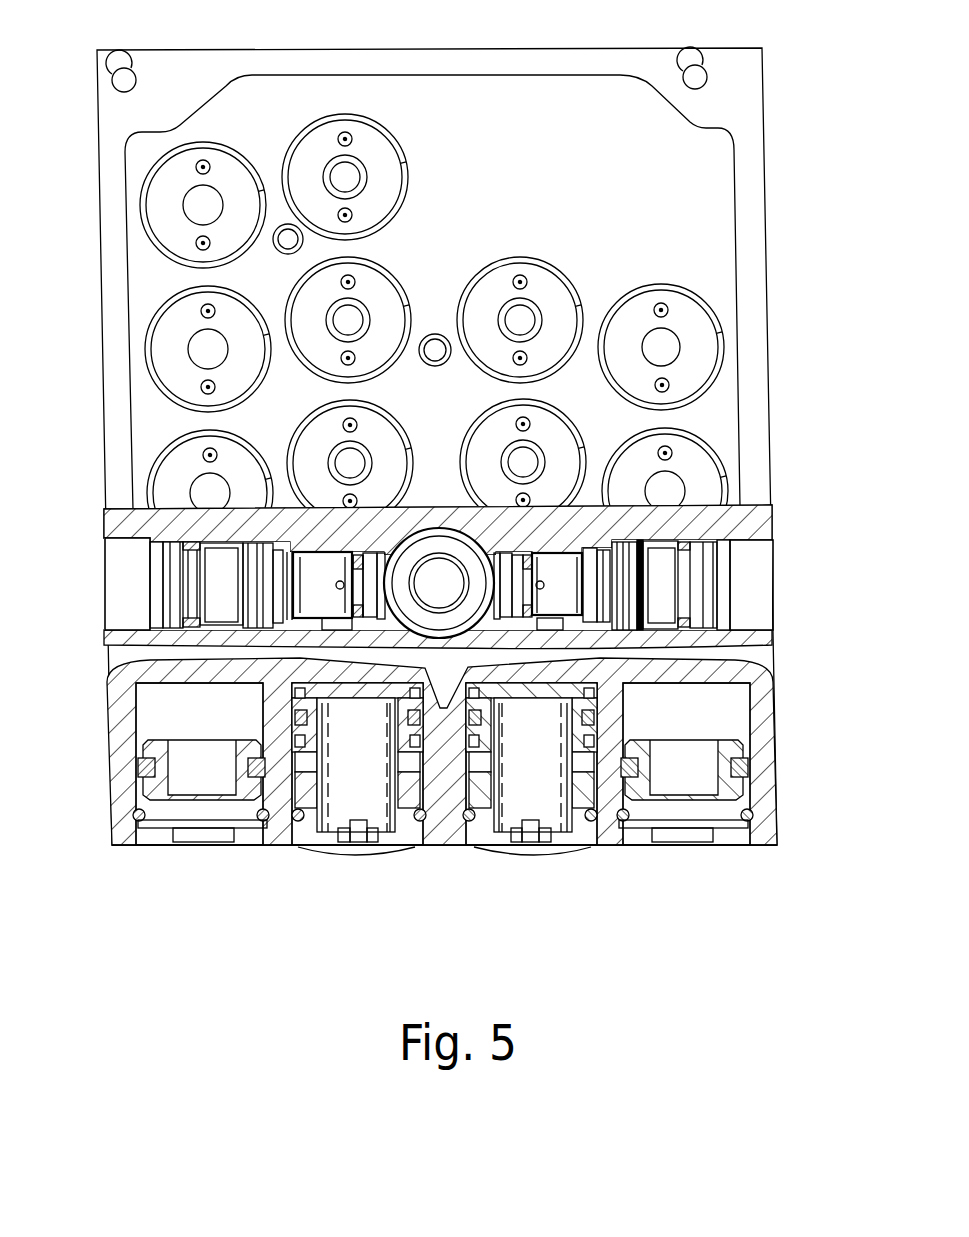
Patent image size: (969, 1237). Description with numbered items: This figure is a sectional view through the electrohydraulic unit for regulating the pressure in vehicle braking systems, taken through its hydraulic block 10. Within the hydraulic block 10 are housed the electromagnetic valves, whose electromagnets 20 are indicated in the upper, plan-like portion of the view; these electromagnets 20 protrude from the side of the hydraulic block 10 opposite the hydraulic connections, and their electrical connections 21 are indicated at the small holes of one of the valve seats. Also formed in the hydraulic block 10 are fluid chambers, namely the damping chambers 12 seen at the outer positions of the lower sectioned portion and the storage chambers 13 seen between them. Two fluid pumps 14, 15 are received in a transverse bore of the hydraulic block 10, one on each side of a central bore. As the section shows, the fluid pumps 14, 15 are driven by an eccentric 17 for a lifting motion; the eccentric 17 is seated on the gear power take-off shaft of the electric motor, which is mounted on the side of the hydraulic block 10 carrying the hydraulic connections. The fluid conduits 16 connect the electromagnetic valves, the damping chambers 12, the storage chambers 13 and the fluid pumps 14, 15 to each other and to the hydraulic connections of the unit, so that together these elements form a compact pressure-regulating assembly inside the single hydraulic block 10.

The hydraulic block 10 is at (755, 523).
The damping chambers 12 is at (718, 720).
The storage chambers 13 is at (512, 800).
The fluid pump 14 is at (650, 500).
The fluid pump 15 is at (323, 577).
The fluid conduits 16 is at (545, 630).
The eccentric 17 is at (439, 715).
The electromagnets 20 is at (653, 288).
The electrical connections 21 is at (668, 384).